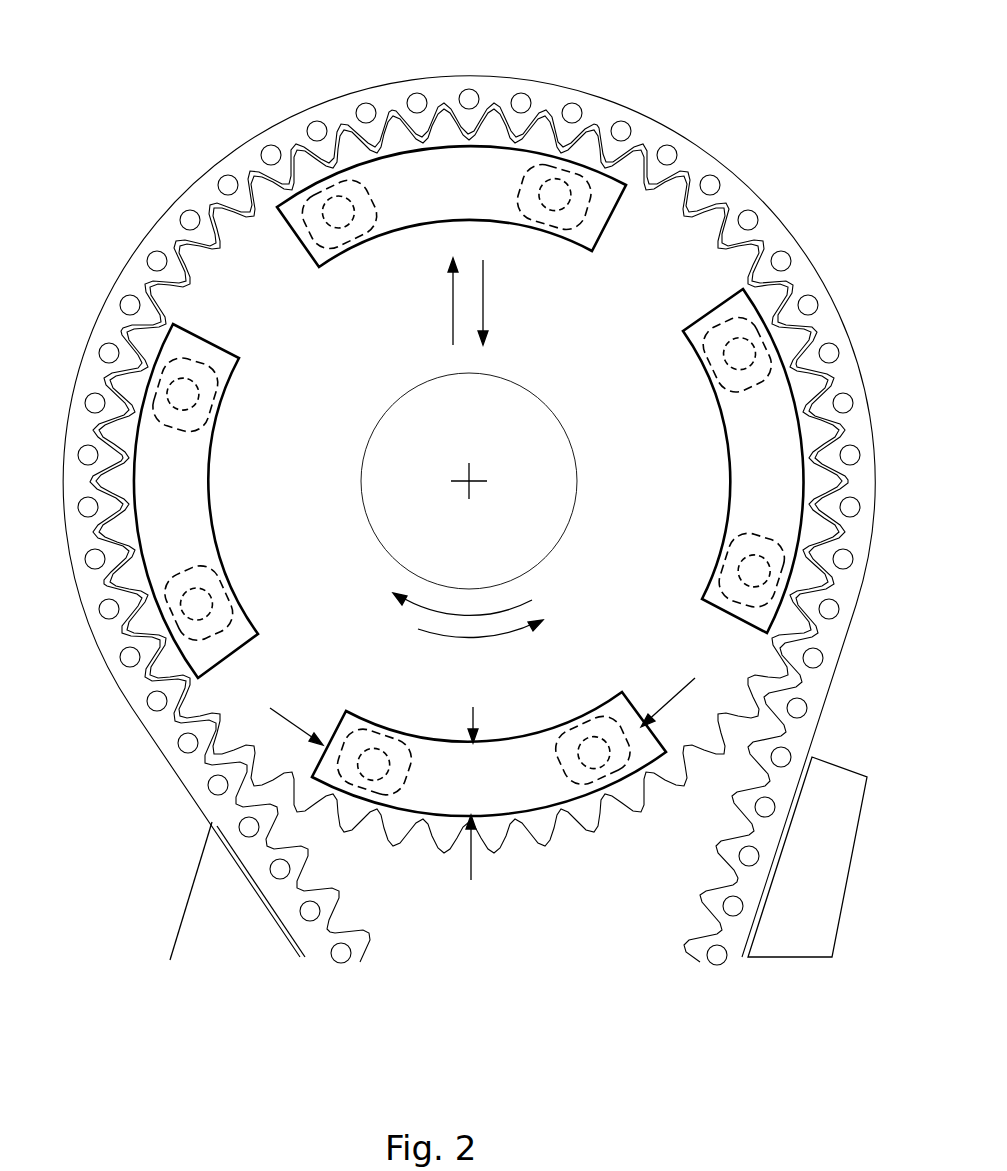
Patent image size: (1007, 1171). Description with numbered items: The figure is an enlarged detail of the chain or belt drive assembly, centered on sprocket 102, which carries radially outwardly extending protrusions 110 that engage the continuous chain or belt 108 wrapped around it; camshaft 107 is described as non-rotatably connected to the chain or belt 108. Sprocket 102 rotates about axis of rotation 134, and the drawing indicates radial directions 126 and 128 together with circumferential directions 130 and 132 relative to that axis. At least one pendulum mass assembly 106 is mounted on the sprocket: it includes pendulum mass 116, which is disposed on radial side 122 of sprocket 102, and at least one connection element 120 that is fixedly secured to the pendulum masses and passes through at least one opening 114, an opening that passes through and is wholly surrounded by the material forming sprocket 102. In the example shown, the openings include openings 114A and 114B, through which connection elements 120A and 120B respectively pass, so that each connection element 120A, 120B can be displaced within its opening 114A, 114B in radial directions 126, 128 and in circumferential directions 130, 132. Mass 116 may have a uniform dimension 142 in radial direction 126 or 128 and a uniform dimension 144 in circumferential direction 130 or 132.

The sprocket 102 is at (688, 178).
The pendulum mass assembly 106 is at (445, 150).
The camshaft 107 is at (410, 437).
The continuous chain or belt 108 is at (145, 728).
The radially outwardly extending protrusions 110 is at (346, 135).
The opening 114 is at (325, 250).
The opening 114A is at (420, 777).
The opening 114B is at (557, 780).
The pendulum mass 116 is at (516, 167).
The connection element 120 is at (338, 200).
The connection element 120A is at (378, 778).
The connection element 120B is at (590, 773).
The radial side 122 is at (692, 255).
The radial direction 126 is at (450, 308).
The radial direction 128 is at (486, 294).
The circumferential direction 130 is at (466, 639).
The circumferential direction 132 is at (408, 608).
The axis of rotation 134 is at (470, 479).
The uniform dimension 142 is at (470, 848).
The uniform dimension 144 is at (672, 700).